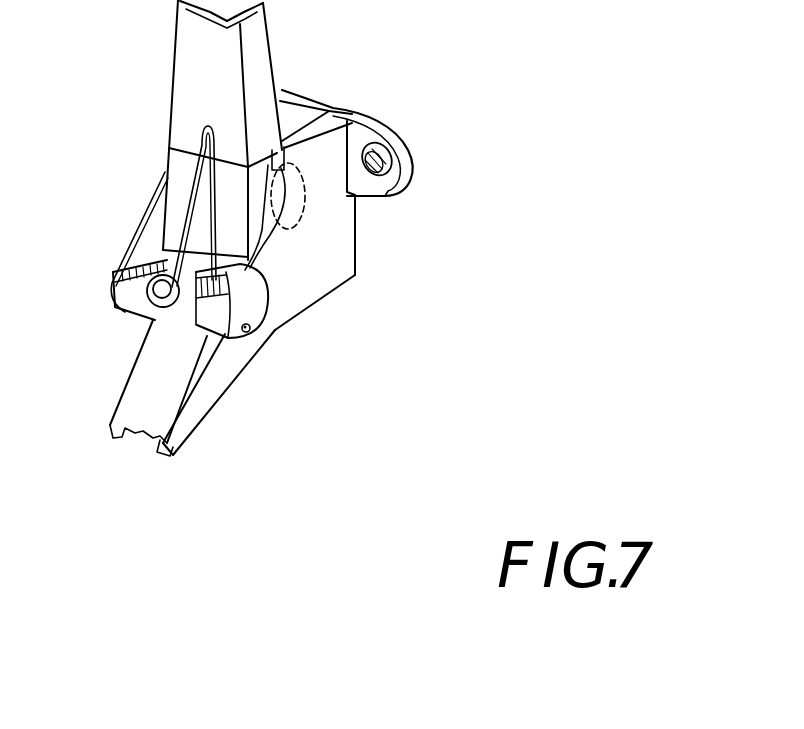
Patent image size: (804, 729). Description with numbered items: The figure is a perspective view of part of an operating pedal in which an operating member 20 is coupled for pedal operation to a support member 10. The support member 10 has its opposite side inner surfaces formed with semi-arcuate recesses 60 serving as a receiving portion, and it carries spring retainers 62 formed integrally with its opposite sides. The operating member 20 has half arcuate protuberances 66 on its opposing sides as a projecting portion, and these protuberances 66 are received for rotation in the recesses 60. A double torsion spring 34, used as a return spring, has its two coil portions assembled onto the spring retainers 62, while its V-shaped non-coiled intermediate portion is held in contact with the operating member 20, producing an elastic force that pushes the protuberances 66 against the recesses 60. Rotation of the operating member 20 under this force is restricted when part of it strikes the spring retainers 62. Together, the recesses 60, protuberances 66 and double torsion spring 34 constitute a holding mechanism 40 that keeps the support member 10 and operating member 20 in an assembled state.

The support member 10 is at (328, 278).
The operating member 20 is at (185, 52).
The double torsion spring 34 is at (167, 193).
The holding mechanism 40 is at (236, 157).
The semi-arcuate recesses 60 is at (303, 214).
The spring retainers 62 is at (128, 322).
The half arcuate protuberances 66 is at (240, 222).